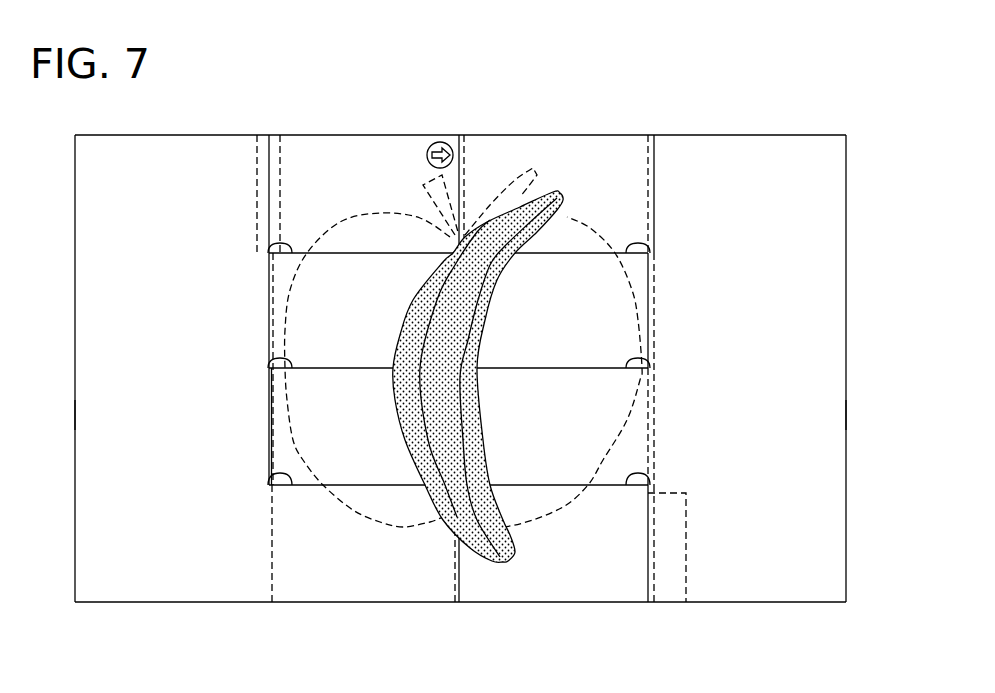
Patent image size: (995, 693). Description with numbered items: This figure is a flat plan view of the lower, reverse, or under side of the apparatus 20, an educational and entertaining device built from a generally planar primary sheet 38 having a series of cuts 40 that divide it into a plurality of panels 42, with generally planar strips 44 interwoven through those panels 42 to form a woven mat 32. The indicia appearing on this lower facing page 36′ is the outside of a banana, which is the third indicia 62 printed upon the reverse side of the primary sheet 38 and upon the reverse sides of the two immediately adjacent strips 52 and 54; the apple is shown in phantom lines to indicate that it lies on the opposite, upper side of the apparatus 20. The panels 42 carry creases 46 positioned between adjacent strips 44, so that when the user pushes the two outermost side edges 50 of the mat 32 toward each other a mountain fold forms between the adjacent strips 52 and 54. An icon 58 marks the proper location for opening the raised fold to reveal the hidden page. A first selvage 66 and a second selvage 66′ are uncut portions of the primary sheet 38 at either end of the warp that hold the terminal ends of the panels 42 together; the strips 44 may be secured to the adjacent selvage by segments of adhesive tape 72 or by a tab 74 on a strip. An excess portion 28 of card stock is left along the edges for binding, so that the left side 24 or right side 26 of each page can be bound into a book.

The apparatus 20 is at (603, 97).
The left side 24 is at (85, 314).
The right side 26 is at (838, 314).
The excess portion 28 is at (88, 414).
The woven mat 32 is at (430, 603).
The lower facing page 36′ is at (280, 200).
The primary sheet 38 is at (638, 218).
The cuts 40 is at (258, 246).
The panels 42 is at (387, 194).
The strips 44 is at (322, 148).
The creases 46 is at (268, 597).
The outermost side edges 50 is at (268, 493).
The first adjacent strip 52 is at (283, 393).
The second adjacent strip 54 is at (643, 290).
The icon 58 is at (550, 88).
The third indicia 62 is at (557, 192).
The first selvage 66 is at (170, 148).
The second selvage 66′ is at (752, 148).
The adhesive tape 72 is at (248, 150).
The tab 74 is at (676, 553).